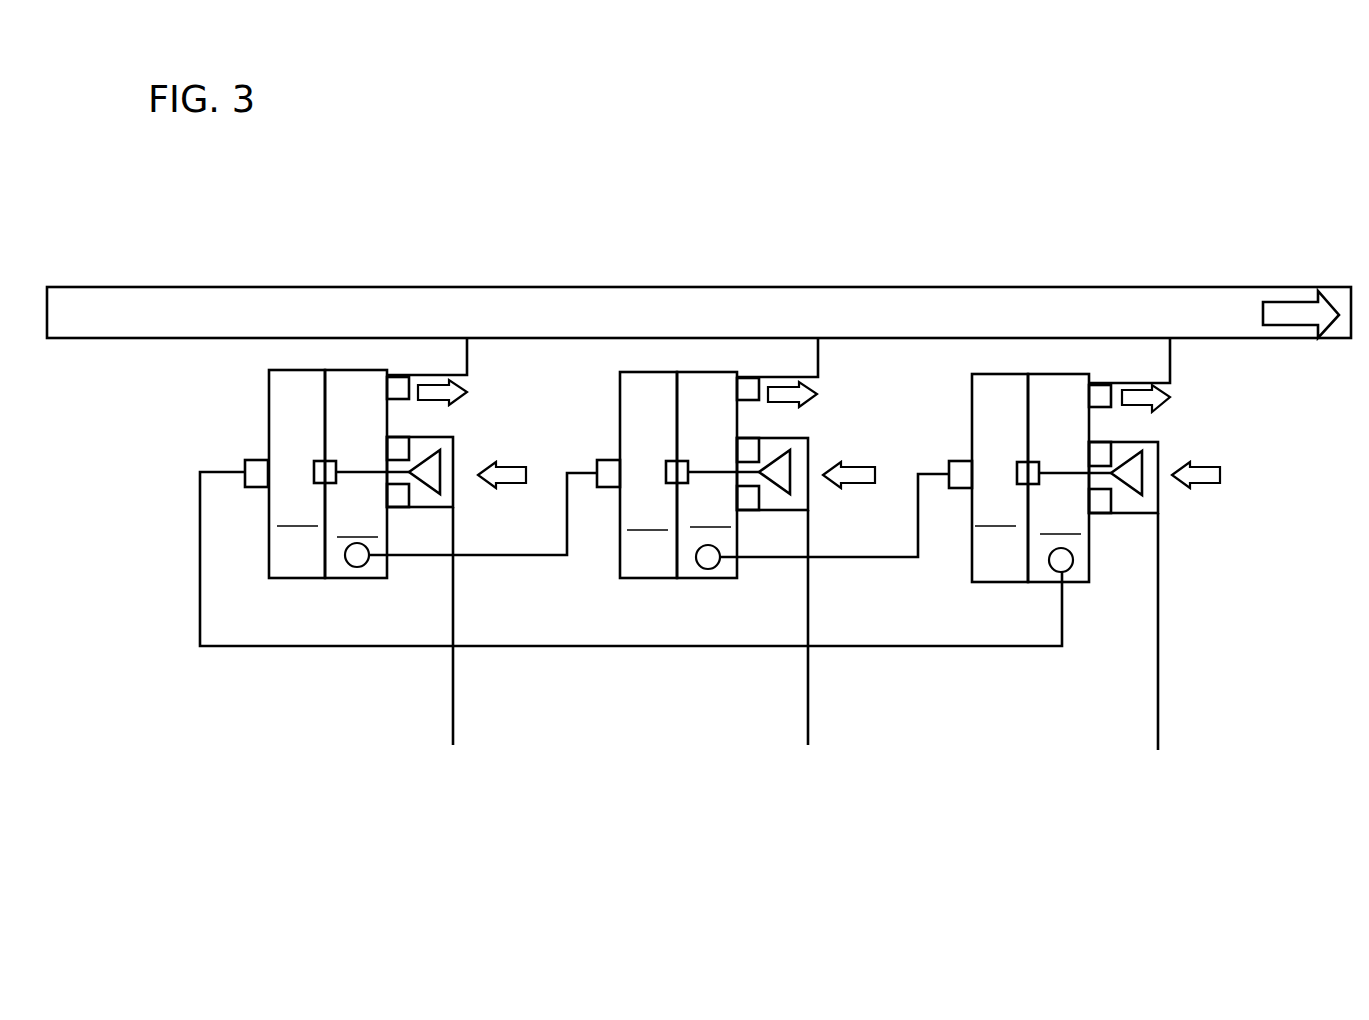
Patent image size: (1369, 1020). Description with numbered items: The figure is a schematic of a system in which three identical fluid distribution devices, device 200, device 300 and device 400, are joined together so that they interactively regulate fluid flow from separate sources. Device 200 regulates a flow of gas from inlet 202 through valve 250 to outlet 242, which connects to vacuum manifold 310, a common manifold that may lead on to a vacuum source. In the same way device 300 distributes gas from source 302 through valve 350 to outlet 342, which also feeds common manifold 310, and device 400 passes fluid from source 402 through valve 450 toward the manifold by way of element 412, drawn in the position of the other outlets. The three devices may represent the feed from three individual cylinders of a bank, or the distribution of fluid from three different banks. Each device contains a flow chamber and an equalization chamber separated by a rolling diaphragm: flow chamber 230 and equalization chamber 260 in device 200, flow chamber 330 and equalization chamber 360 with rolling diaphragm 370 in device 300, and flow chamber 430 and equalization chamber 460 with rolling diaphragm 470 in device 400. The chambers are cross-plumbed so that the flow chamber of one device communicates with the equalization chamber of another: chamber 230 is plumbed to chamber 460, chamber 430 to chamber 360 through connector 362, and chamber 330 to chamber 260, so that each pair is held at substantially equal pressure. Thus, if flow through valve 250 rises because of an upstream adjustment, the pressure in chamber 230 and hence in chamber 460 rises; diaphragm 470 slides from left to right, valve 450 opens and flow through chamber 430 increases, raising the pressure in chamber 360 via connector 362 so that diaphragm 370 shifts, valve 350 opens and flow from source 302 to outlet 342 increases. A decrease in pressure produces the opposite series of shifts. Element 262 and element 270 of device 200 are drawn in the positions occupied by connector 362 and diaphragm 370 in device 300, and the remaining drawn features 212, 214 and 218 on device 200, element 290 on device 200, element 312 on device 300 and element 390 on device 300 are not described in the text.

The fluid distribution device 200 is at (1099, 494).
The inlet 202 is at (1160, 712).
The nozzle / pointer element 212 is at (1128, 473).
The lower connector 214 is at (1100, 500).
The coupling line 218 is at (1058, 475).
The flow chamber 230 is at (1058, 478).
The outlet 242 is at (1102, 408).
The valve 250 is at (1108, 559).
The equalization chamber 260 is at (1000, 478).
The sensor block 262 is at (952, 463).
The divider / controller 270 is at (1028, 402).
The pin / outlet 290 is at (1065, 565).
The fluid distribution device 300 is at (739, 554).
The source 302 is at (808, 733).
The vacuum manifold 310 is at (930, 325).
The nozzle / pointer element 312 is at (782, 475).
The flow chamber 330 is at (707, 475).
The outlet 342 is at (745, 390).
The valve 350 is at (802, 452).
The equalization chamber 360 is at (648, 475).
The connector 362 is at (600, 463).
The rolling diaphragm 370 is at (677, 408).
The pin / outlet 390 is at (709, 560).
The fluid distribution device 400 is at (631, 535).
The source 402 is at (453, 710).
The upper connector 412 is at (396, 386).
The flow chamber 430 is at (356, 474).
The valve 450 is at (462, 432).
The equalization chamber 460 is at (297, 474).
The rolling diaphragm 470 is at (325, 402).